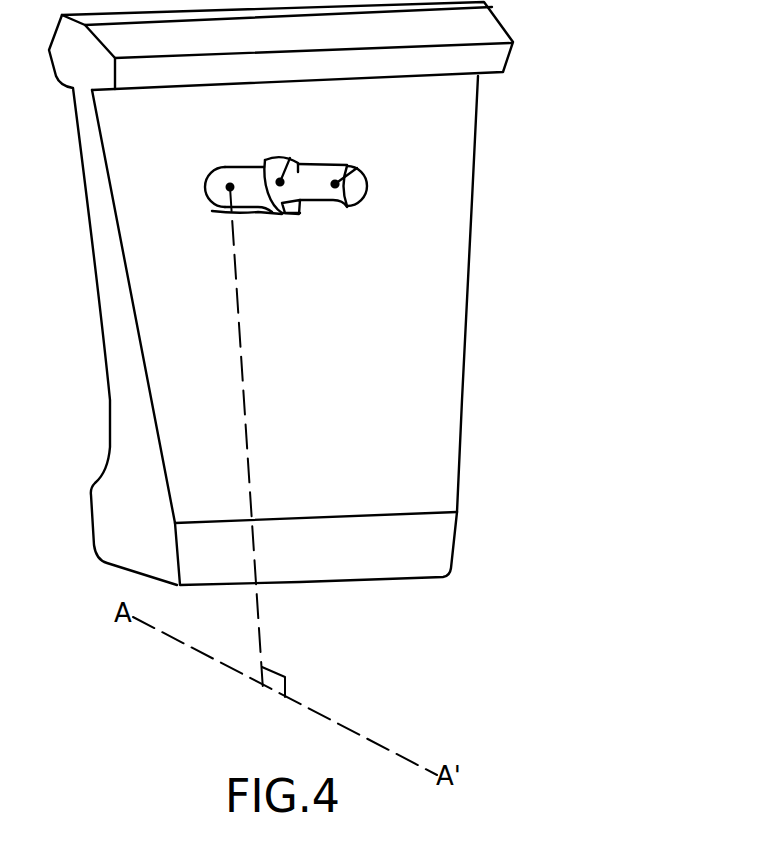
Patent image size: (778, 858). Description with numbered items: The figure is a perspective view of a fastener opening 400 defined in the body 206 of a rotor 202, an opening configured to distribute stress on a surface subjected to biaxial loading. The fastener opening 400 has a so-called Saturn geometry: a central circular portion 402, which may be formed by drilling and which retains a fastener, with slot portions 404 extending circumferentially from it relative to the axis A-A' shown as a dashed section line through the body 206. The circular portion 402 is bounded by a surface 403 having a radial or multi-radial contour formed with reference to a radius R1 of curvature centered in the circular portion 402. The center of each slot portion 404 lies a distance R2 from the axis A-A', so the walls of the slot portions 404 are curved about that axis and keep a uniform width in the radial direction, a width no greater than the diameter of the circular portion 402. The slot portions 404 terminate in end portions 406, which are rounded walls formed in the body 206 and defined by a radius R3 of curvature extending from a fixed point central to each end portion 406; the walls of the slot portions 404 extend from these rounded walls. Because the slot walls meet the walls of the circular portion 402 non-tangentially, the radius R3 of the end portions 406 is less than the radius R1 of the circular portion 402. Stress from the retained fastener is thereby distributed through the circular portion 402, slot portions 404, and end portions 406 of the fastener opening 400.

The rotor 202 is at (435, 540).
The body 206 is at (445, 183).
The fastener opening 400 is at (280, 184).
The circular portion 402 is at (267, 160).
The surface 403 is at (292, 213).
The slot portions 404 is at (230, 210).
The end portions 406 is at (203, 193).
The radius of curvature of circular portion R1 is at (290, 158).
The radius to center of slot portion R2 is at (248, 442).
The radius of curvature of end portion R3 is at (343, 163).